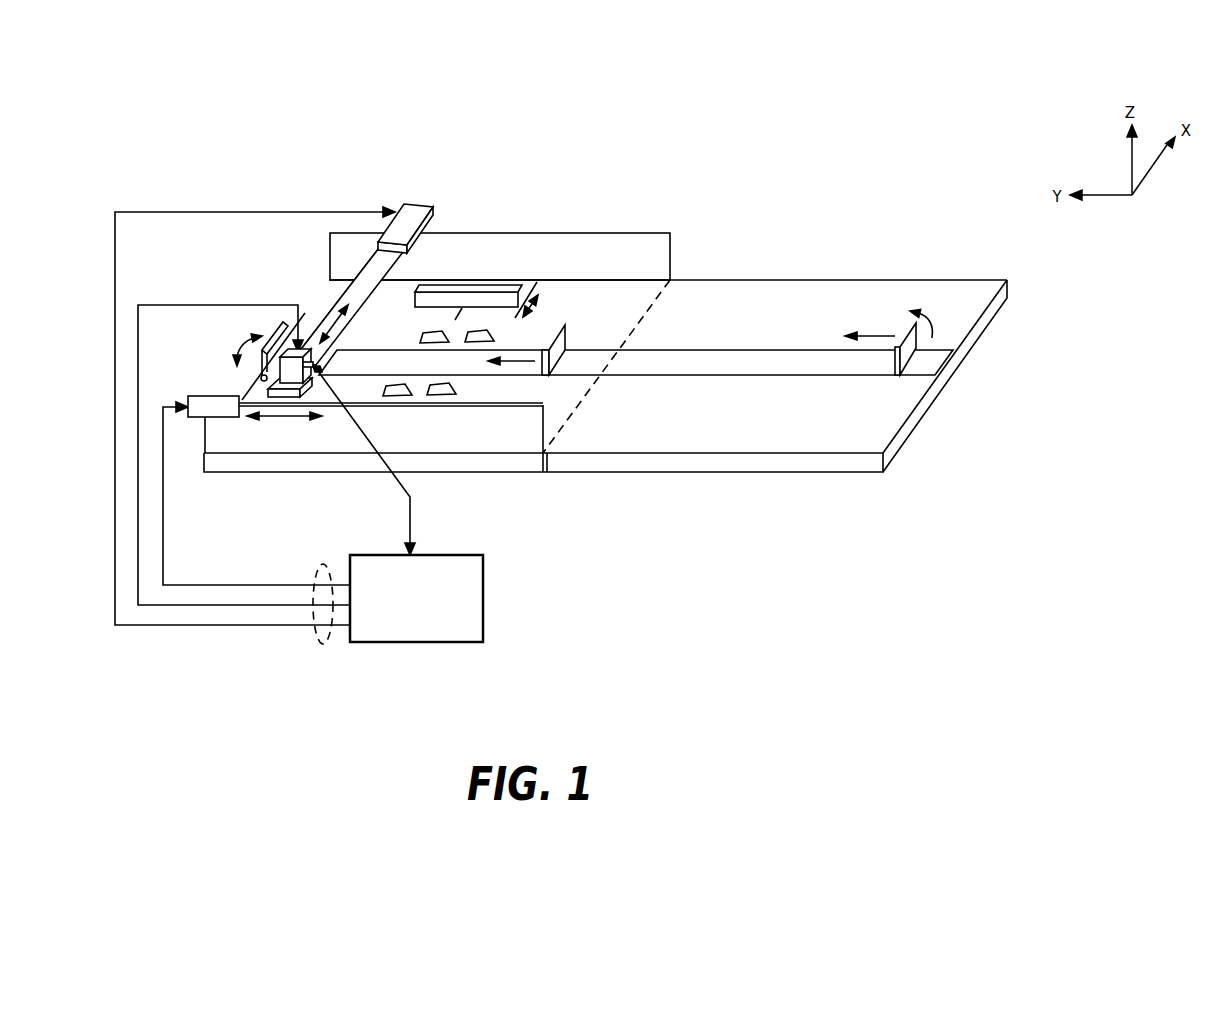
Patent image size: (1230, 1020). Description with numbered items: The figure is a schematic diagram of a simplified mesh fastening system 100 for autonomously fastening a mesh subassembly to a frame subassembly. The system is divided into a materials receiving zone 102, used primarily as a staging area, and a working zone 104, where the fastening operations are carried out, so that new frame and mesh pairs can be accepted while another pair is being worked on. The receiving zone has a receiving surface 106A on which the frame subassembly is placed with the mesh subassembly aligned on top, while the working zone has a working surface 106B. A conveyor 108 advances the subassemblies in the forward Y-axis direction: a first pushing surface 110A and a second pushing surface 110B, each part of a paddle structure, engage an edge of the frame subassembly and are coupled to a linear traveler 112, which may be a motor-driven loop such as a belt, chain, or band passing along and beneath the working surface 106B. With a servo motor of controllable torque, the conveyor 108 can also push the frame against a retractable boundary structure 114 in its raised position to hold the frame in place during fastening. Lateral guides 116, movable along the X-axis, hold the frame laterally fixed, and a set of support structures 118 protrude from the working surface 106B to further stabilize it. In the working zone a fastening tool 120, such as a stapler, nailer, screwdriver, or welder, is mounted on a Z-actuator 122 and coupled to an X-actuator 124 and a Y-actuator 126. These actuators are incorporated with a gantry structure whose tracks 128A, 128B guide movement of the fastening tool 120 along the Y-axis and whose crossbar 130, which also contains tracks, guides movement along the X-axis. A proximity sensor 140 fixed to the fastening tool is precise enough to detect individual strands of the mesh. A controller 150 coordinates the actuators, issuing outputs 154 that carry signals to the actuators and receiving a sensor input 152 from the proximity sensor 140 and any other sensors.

The mesh fastening system 100 is at (822, 92).
The materials receiving zone 102 is at (873, 244).
The working zone 104 is at (532, 188).
The receiving surface 106A is at (717, 423).
The working surface 106B is at (555, 401).
The conveyor 108 is at (780, 306).
The first pushing surface 110A is at (900, 360).
The second pushing surface 110B is at (552, 322).
The linear traveler 112 is at (750, 360).
The retractable boundary structure 114 is at (268, 340).
The lateral guides 116 is at (478, 284).
The support structures 118 is at (468, 342).
The fastening tool 120 is at (300, 290).
The Z-actuator 122 is at (311, 381).
The X-actuator 124 is at (412, 203).
The Y-actuator 126 is at (214, 396).
The first track 128A is at (623, 243).
The second track 128B is at (455, 442).
The crossbar 130 is at (336, 287).
The proximity sensor 140 is at (322, 360).
The controller 150 is at (425, 643).
The sensor input 152 is at (412, 498).
The outputs 154 is at (327, 642).